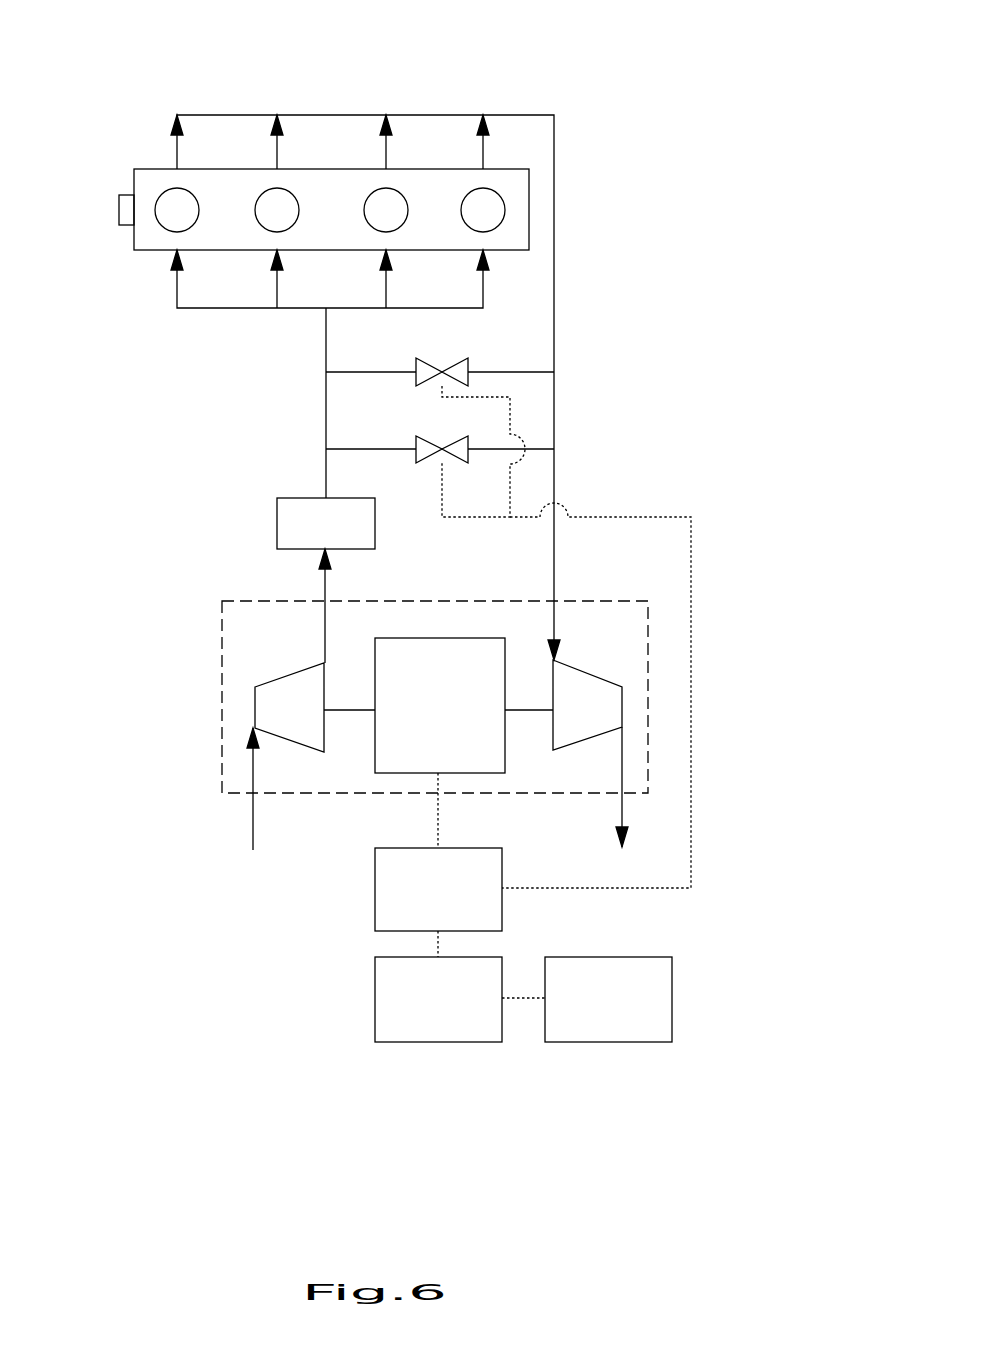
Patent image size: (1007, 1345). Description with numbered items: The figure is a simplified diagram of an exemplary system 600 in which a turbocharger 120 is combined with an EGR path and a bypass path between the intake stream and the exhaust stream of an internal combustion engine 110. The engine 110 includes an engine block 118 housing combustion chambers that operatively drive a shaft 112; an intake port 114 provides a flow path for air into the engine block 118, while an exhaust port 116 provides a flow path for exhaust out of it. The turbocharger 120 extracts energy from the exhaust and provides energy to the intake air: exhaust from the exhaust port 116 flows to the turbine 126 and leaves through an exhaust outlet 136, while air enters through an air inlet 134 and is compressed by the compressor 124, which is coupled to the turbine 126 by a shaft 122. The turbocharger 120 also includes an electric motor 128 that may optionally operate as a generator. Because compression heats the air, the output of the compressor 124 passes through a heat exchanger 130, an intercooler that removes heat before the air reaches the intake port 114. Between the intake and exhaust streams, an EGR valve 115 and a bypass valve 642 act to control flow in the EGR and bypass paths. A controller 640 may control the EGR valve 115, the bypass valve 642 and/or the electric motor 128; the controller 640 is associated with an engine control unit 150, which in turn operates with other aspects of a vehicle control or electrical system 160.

The exemplary system 600 is at (592, 40).
The internal combustion engine 110 is at (132, 167).
The shaft 112 is at (118, 198).
The intake port 114 is at (177, 308).
The EGR valve 115 is at (416, 360).
The exhaust port 116 is at (340, 113).
The engine block 118 is at (316, 223).
The turbocharger 120 is at (243, 634).
The shaft 122 is at (357, 712).
The compressor 124 is at (271, 722).
The turbine 126 is at (568, 722).
The electric motor 128 is at (421, 722).
The heat exchanger 130 is at (307, 536).
The air inlet 134 is at (252, 805).
The exhaust outlet 136 is at (618, 812).
The engine control unit 150 is at (419, 1011).
The vehicle control or electrical system 160 is at (589, 1011).
The controller 640 is at (419, 902).
The bypass valve 642 is at (416, 438).